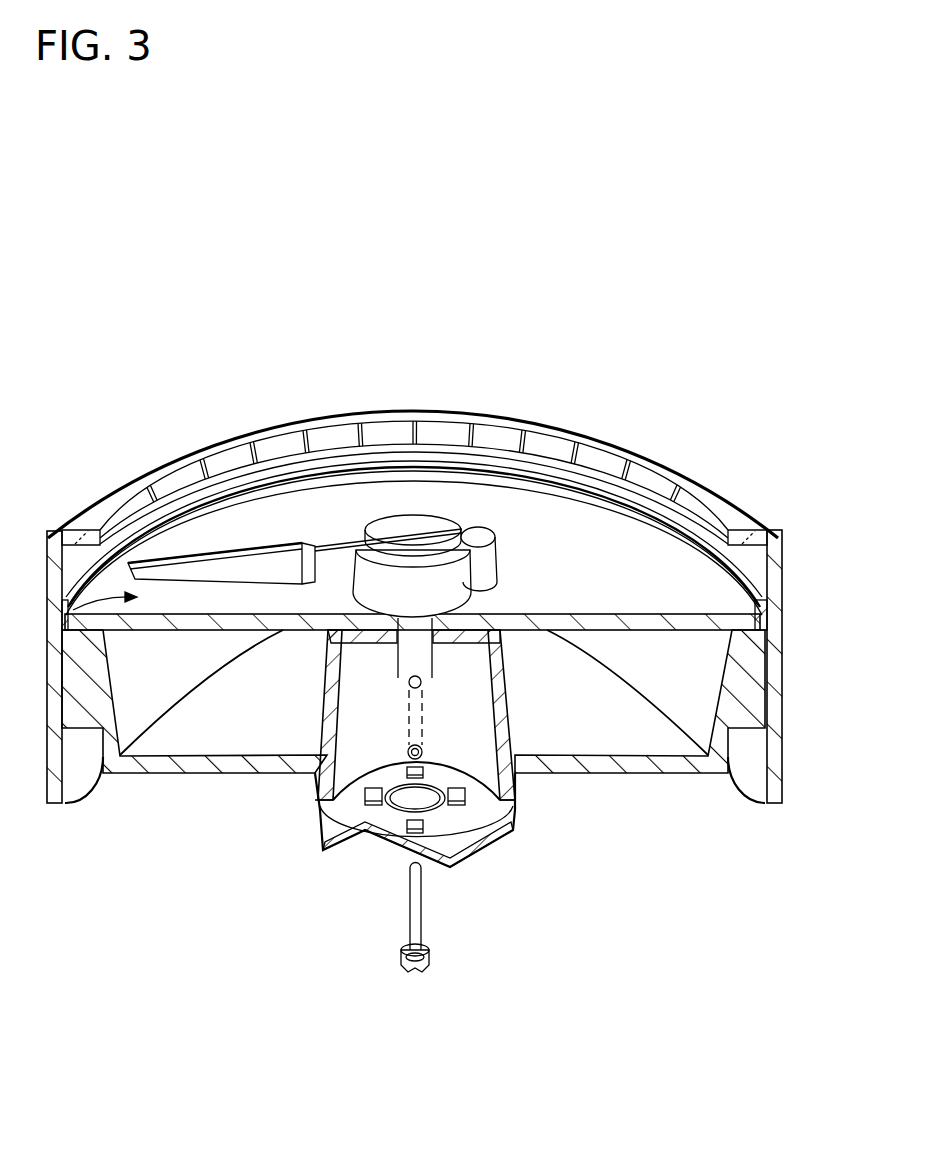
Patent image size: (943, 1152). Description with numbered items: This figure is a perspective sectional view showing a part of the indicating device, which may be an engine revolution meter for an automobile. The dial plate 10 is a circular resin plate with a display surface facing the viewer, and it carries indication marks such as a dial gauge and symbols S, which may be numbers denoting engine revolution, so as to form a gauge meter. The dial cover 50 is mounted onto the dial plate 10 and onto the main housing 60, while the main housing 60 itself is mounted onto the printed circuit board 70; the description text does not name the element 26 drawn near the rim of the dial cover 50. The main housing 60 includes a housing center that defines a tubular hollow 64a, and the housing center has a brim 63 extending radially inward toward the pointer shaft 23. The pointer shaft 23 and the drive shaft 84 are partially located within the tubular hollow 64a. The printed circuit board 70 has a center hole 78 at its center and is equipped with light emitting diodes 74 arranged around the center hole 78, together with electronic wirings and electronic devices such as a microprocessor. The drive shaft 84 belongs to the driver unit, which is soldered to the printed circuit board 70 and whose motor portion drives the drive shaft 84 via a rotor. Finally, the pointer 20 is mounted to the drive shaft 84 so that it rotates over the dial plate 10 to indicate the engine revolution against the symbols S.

The dial plate 10 is at (717, 592).
The pointer 20 is at (440, 505).
The pointer shaft 23 is at (437, 655).
The window ring 26 is at (260, 522).
The dial cover 50 is at (737, 485).
The main housing 60 is at (756, 814).
The brim 63 is at (338, 640).
The tubular hollow 64a is at (345, 742).
The printed circuit board 70 is at (533, 813).
The light emitting diodes 74 is at (370, 805).
The center hole 78 is at (425, 826).
The drive shaft 84 is at (422, 875).
The symbols S is at (66, 622).